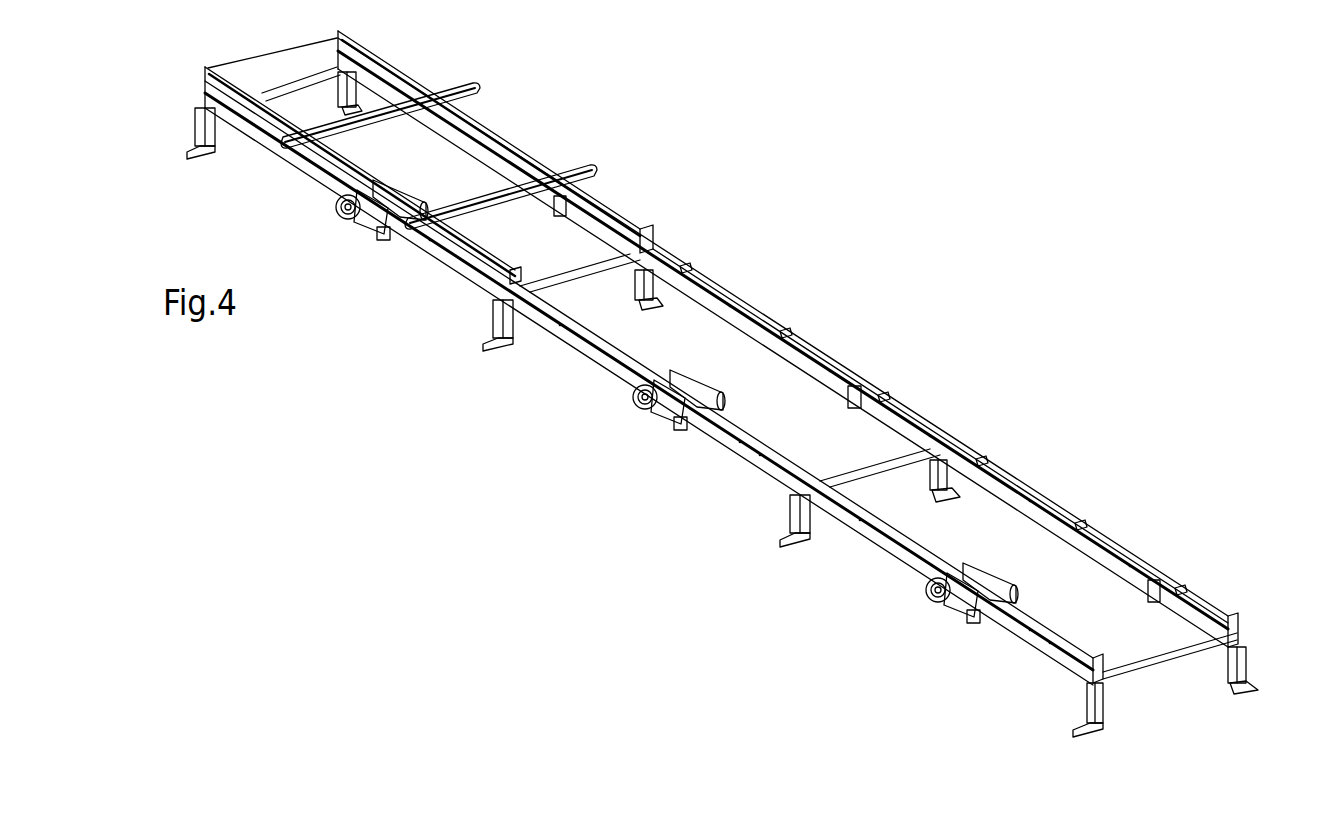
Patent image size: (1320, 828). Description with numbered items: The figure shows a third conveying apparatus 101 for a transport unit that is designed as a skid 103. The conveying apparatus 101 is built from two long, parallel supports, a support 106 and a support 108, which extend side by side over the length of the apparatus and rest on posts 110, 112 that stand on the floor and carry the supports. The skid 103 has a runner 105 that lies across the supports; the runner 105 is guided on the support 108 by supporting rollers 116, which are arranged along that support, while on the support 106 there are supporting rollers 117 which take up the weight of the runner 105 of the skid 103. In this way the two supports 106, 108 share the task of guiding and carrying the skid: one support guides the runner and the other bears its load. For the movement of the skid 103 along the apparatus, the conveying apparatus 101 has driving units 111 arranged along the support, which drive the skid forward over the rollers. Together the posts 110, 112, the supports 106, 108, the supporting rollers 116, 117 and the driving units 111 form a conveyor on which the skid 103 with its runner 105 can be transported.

The conveying apparatus 101 is at (910, 192).
The skid 103 is at (379, 122).
The runner 105 is at (248, 92).
The support 106 is at (1093, 657).
The support 108 is at (1225, 620).
The post 110 is at (1224, 674).
The driving unit 111 is at (348, 232).
The post 112 is at (1087, 707).
The supporting roller 116 is at (687, 266).
The supporting roller 117 is at (250, 120).